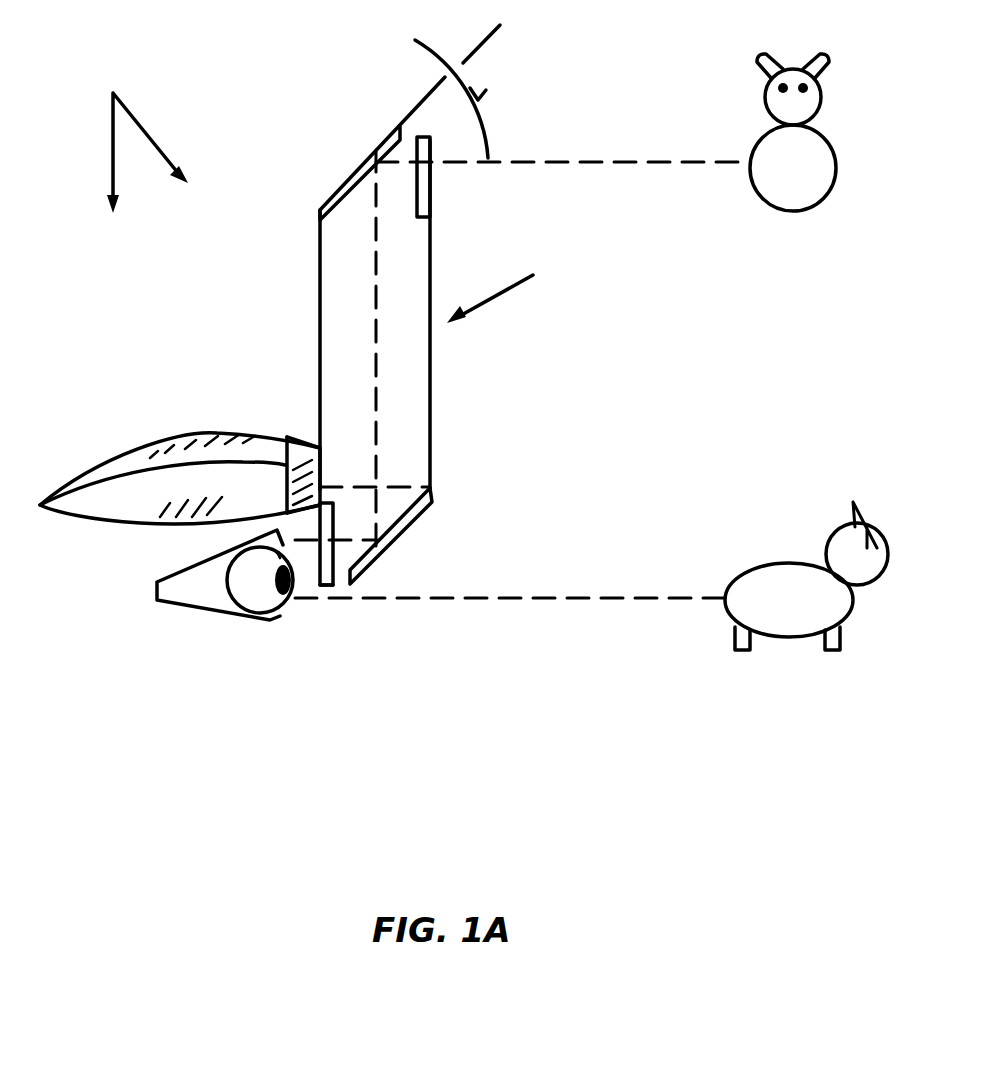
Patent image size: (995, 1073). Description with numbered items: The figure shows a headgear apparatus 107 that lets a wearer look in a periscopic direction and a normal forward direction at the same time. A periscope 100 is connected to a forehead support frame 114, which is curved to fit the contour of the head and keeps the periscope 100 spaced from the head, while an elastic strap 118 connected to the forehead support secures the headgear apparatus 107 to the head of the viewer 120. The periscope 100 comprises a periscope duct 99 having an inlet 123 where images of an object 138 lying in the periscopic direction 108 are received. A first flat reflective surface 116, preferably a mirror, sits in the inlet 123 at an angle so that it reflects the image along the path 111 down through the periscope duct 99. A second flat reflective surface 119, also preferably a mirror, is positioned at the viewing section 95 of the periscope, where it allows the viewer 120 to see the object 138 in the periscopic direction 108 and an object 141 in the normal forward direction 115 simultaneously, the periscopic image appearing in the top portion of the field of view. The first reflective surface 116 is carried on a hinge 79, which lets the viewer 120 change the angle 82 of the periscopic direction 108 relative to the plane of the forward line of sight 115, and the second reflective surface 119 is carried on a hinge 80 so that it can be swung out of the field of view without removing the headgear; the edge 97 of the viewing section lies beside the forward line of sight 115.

The hinge 79 is at (318, 207).
The hinge 80 is at (432, 500).
The angle 82 is at (470, 91).
The viewing section 95 is at (297, 540).
The shutter edge 97 is at (333, 585).
The periscope duct 99 is at (430, 380).
The periscope 100 is at (518, 286).
The headgear apparatus 107 is at (141, 131).
The periscopic direction 108 is at (580, 158).
The reflection path through the periscope duct 111 is at (378, 448).
The forehead support frame 114 is at (287, 437).
The normal forward direction 115 is at (437, 602).
The first flat reflective surface 116 is at (378, 137).
The elastic strap 118 is at (195, 433).
The second flat reflective surface 119 is at (393, 547).
The viewer 120 is at (200, 602).
The inlet 123 is at (433, 190).
The object 138 is at (790, 213).
The object 141 is at (787, 637).